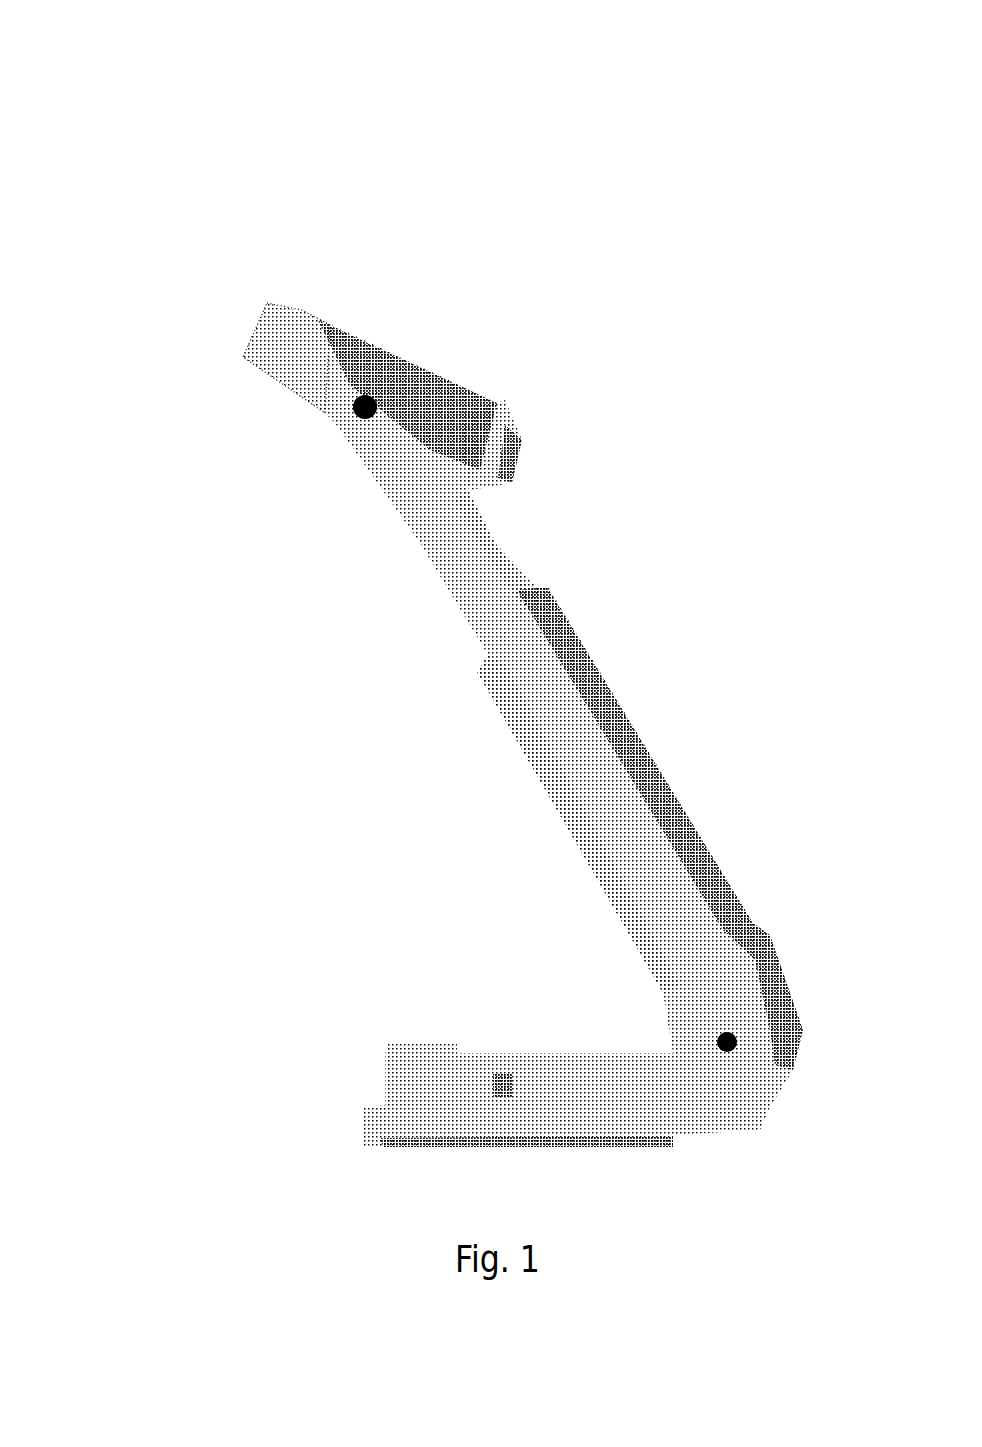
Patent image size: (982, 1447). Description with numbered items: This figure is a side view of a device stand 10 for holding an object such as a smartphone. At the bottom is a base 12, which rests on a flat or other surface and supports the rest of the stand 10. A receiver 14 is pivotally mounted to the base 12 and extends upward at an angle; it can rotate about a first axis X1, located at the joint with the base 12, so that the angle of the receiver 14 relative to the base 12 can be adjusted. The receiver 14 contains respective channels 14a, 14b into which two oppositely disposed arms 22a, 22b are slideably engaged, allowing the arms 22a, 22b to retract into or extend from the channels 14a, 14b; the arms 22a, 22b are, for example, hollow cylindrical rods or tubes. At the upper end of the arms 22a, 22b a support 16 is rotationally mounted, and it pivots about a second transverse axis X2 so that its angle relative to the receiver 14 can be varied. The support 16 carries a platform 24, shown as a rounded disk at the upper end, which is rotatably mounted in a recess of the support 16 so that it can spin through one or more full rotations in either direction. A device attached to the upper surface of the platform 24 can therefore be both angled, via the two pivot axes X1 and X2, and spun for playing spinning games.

The device stand 10 is at (461, 681).
The base 12 is at (538, 1065).
The receiver 14 is at (539, 900).
The receiver channel 14a is at (533, 593).
The receiver channel 14b is at (488, 655).
The support 16 is at (480, 442).
The arm 22a is at (495, 543).
The arm 22b is at (380, 378).
The platform 24 is at (430, 378).
The first axis X1 is at (735, 1052).
The second transverse axis X2 is at (355, 413).